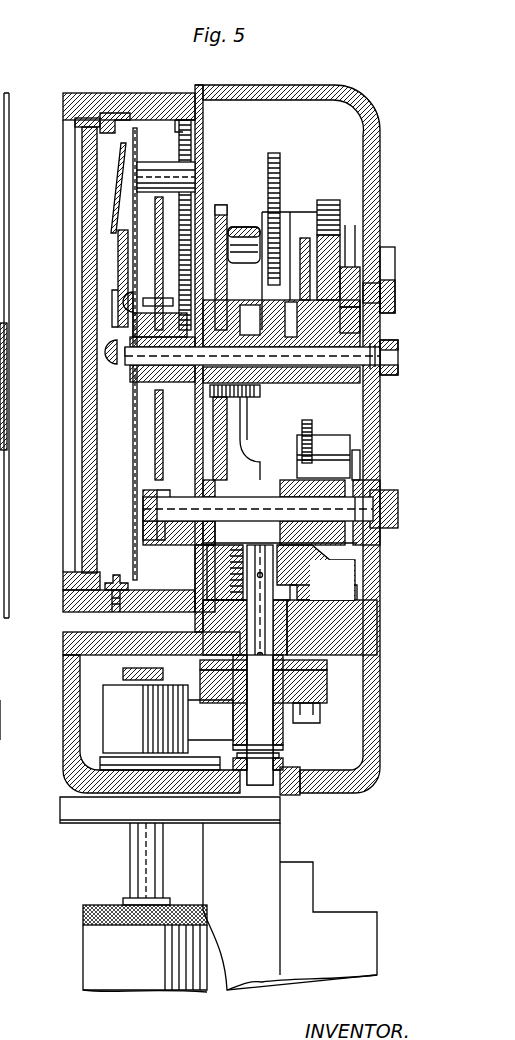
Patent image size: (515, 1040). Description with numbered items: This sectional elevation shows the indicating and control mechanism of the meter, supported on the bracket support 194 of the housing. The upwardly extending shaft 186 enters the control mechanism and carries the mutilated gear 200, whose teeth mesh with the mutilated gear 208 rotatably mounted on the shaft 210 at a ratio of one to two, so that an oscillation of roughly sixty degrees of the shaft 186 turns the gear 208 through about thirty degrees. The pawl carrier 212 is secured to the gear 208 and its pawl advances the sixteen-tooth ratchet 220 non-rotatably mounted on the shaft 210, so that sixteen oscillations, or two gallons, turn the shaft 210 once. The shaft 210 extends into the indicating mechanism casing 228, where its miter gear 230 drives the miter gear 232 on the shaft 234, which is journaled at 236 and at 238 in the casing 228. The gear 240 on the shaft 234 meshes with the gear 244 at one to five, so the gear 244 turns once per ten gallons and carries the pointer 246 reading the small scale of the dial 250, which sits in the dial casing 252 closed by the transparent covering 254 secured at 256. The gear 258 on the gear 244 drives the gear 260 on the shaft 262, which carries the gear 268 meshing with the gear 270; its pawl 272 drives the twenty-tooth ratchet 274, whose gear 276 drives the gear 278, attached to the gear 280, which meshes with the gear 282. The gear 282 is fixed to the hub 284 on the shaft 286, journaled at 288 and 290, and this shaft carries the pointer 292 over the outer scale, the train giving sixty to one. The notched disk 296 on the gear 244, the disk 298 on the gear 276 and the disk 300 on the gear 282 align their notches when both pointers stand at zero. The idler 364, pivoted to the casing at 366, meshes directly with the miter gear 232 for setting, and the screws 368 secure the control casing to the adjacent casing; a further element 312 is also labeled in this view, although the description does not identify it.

The shaft 186 is at (137, 860).
The bracket support 194 is at (270, 842).
The mutilated gear 200 is at (0, 777).
The mutilated gear 208 is at (327, 693).
The shaft 210 is at (260, 762).
The pawl carrier 212 is at (327, 678).
The ratchet 220 is at (327, 667).
The indicating mechanism casing 228 is at (347, 102).
The miter gear 230 is at (300, 587).
The miter gear 232 is at (295, 552).
The shaft 234 is at (377, 553).
The journal 236 is at (373, 473).
The journal 238 is at (193, 547).
The gear 240 is at (150, 533).
The gear 244 is at (153, 462).
The pointer 246 is at (120, 230).
The dial 250 is at (134, 127).
The dial casing 252 is at (103, 102).
The transparent covering 254 is at (78, 145).
The securing means 256 is at (117, 583).
The gear 258 is at (127, 380).
The gear 260 is at (178, 127).
The shaft 262 is at (357, 240).
The gear 268 is at (211, 217).
The gear 270 is at (233, 222).
The pawl 272 is at (241, 230).
The ratchet 274 is at (248, 413).
The gear 276 is at (267, 420).
The gear 278 is at (281, 160).
The gear 280 is at (327, 200).
The gear 282 is at (340, 227).
The hub 284 is at (365, 300).
The shaft 286 is at (345, 323).
The journal 288 is at (348, 353).
The journal 290 is at (252, 356).
The pointer 292 is at (112, 197).
The disk 296 is at (172, 267).
The disk 298 is at (297, 417).
The disk 300 is at (310, 257).
The bracket 312 is at (127, 672).
The idler 364 is at (313, 443).
The pivot 366 is at (357, 463).
The screws 368 is at (0, 717).